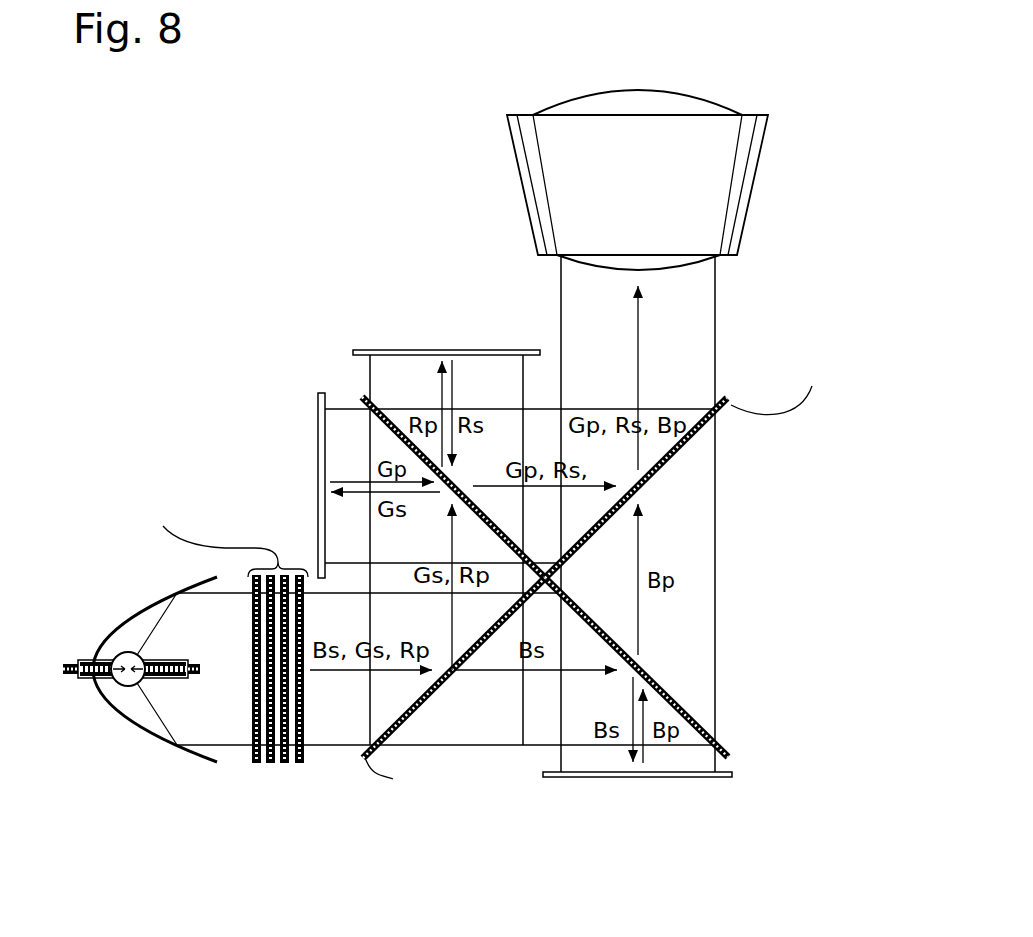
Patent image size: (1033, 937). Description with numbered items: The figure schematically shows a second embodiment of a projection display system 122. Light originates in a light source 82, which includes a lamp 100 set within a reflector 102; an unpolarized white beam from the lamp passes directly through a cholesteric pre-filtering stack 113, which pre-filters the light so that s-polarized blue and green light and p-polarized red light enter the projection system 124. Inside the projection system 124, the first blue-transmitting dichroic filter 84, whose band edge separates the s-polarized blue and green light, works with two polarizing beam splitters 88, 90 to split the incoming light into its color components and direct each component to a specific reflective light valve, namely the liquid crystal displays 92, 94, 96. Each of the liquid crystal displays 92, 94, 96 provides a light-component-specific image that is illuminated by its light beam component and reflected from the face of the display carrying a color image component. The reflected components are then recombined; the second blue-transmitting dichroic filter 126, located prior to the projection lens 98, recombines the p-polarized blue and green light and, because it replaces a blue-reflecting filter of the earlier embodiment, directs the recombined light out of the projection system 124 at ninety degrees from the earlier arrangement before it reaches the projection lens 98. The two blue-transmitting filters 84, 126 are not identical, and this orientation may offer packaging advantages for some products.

The light source 82 is at (90, 743).
The blue-transmitting dichroic filter 84 is at (440, 684).
The polarizing beam splitter 88 is at (665, 695).
The polarizing beam splitter 90 is at (487, 522).
The liquid crystal display 92 is at (370, 350).
The liquid crystal display 94 is at (318, 408).
The liquid crystal display 96 is at (702, 779).
The projection lens 98 is at (710, 102).
The lamp 100 is at (168, 681).
The reflector 102 is at (200, 584).
The pre-filtering stack 113 is at (267, 792).
The projection display system 122 is at (338, 247).
The projection system 124 is at (782, 783).
The blue-transmitting dichroic filter 126 is at (670, 461).